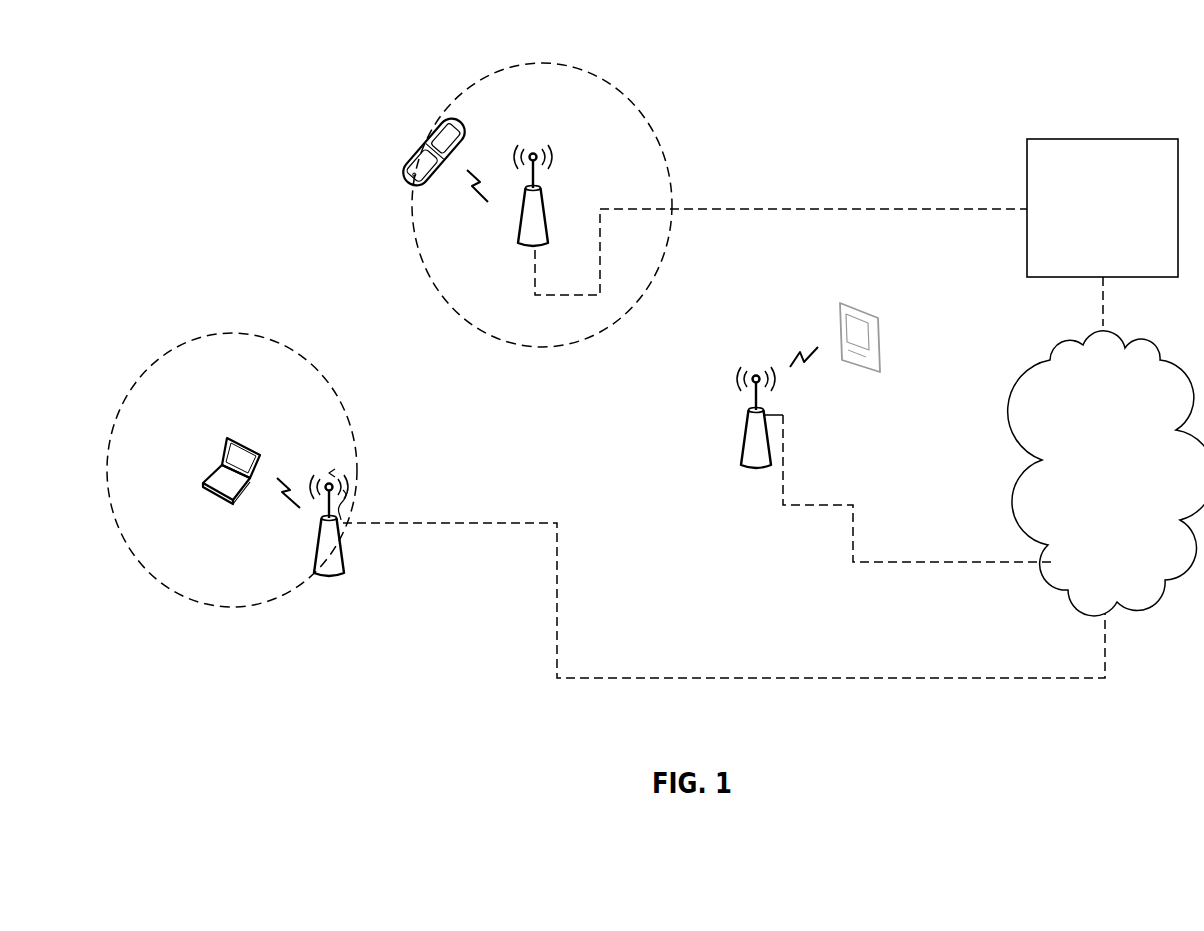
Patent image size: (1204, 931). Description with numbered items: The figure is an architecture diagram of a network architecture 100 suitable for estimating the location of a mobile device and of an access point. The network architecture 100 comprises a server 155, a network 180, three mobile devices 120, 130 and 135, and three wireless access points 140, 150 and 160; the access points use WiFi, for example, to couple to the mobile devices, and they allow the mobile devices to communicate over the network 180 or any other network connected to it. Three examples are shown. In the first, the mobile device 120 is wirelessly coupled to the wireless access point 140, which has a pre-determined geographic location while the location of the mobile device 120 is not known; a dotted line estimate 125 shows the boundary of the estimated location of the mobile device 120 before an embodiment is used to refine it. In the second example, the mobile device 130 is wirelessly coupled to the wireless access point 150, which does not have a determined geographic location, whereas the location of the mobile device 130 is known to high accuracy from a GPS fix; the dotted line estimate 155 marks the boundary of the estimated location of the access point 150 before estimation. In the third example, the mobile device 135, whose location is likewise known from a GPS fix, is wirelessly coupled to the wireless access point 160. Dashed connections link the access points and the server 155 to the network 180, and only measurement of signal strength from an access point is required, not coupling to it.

The network architecture 100 is at (1082, 58).
The mobile device 120 is at (243, 445).
The dotted line estimate 125 is at (205, 604).
The mobile device 130 is at (462, 148).
The mobile device 135 is at (838, 310).
The wireless access point 140 is at (342, 534).
The wireless access point 150 is at (519, 201).
The dotted line estimate / server 155 is at (637, 108).
The wireless access point 160 is at (753, 434).
The network 180 is at (1106, 473).